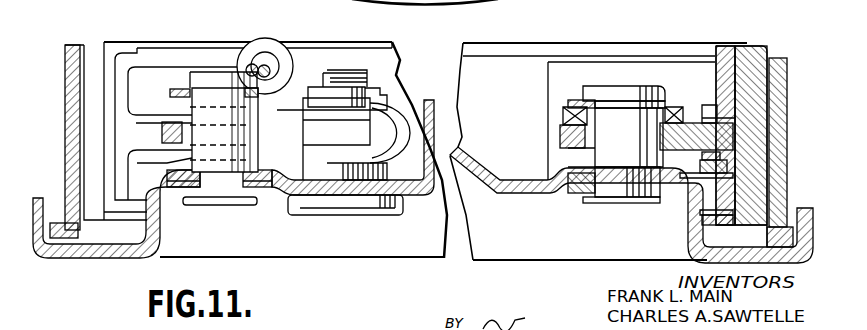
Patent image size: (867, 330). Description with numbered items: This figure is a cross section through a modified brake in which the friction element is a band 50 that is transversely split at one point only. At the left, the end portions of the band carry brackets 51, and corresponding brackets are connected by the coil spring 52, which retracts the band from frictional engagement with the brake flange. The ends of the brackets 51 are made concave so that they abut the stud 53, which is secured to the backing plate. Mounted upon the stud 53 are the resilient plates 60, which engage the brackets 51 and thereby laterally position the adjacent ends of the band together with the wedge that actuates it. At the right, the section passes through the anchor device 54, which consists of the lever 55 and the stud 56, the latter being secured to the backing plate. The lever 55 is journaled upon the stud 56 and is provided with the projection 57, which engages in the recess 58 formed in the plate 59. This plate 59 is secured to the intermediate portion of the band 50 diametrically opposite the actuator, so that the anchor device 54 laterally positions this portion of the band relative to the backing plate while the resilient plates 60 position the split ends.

The band 50 is at (743, 47).
The brackets 51 is at (138, 150).
The coil spring 52 is at (265, 45).
The stud 53 is at (227, 170).
The anchor device 54 is at (560, 101).
The lever 55 is at (562, 133).
The stud 56 is at (607, 133).
The projection 57 is at (703, 112).
The recess 58 is at (720, 147).
The plate 59 is at (723, 98).
The resilient plates 60 is at (268, 163).